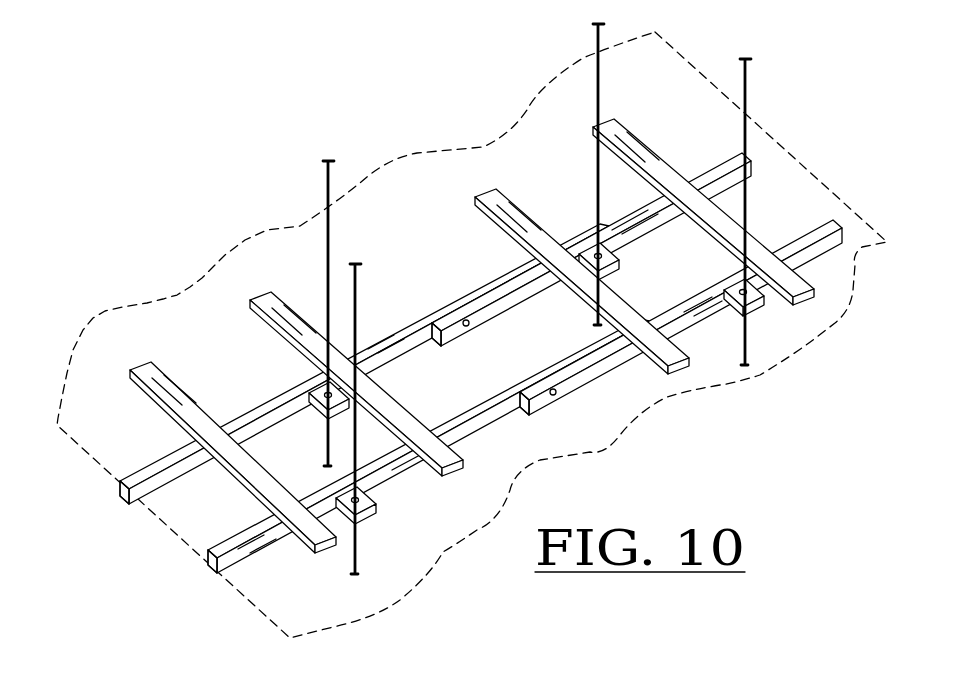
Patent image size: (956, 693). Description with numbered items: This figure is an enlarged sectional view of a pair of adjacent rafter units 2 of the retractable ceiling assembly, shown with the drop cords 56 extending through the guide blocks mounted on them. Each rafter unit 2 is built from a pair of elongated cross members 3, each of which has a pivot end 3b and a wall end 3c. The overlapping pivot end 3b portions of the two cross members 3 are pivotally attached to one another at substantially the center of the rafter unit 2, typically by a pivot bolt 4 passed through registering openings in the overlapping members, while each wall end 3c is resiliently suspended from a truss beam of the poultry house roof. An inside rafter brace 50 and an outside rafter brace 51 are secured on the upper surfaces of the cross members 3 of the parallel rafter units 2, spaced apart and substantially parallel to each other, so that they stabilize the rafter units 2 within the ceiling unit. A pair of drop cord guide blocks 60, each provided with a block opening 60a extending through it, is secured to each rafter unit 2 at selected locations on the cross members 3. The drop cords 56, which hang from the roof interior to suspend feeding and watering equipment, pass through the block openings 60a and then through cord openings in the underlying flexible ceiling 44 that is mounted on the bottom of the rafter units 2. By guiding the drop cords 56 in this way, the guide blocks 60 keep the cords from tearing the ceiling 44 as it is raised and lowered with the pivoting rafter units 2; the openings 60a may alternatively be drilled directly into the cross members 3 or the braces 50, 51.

The rafter unit 2 is at (385, 331).
The cross member 3 is at (538, 290).
The pivot end 3b is at (433, 321).
The wall end 3c is at (120, 498).
The pivot bolt 4 is at (469, 324).
The ceiling 44 is at (416, 154).
The inside rafter brace 50 is at (518, 218).
The outside rafter brace 51 is at (638, 146).
The drop cord 56 is at (327, 200).
The drop cord guide block 60 is at (619, 268).
The block opening 60a is at (596, 254).